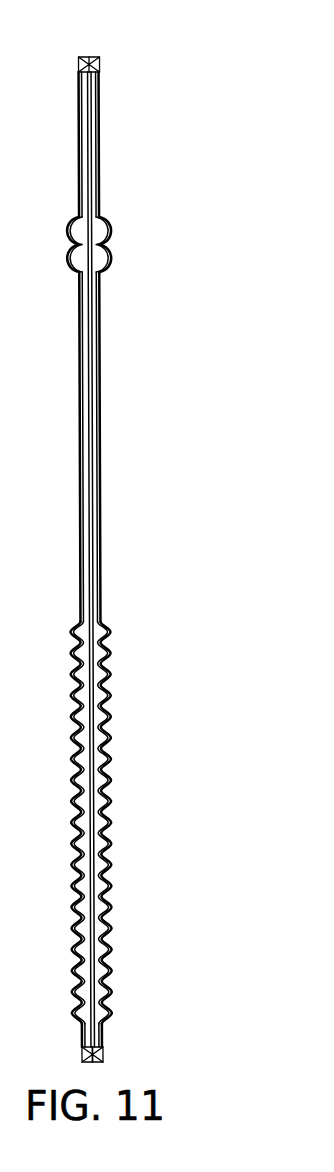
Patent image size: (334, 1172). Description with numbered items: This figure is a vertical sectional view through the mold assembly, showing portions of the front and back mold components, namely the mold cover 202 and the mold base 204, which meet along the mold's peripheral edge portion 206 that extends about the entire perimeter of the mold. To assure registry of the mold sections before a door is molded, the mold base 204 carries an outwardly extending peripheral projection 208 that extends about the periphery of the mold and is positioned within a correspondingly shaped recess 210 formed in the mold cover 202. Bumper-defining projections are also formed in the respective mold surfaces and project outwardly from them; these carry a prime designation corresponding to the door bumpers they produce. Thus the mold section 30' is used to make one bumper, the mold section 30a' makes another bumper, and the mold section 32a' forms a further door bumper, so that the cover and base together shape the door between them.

The peripheral edge portion 206 is at (101, 52).
The peripheral projection 208 is at (78, 62).
The recess 210 is at (100, 65).
The mold section 30' is at (55, 270).
The mold section 30a' is at (129, 221).
The mold section 32a' is at (133, 805).
The mold base 204 is at (72, 800).
The mold cover 202 is at (110, 800).